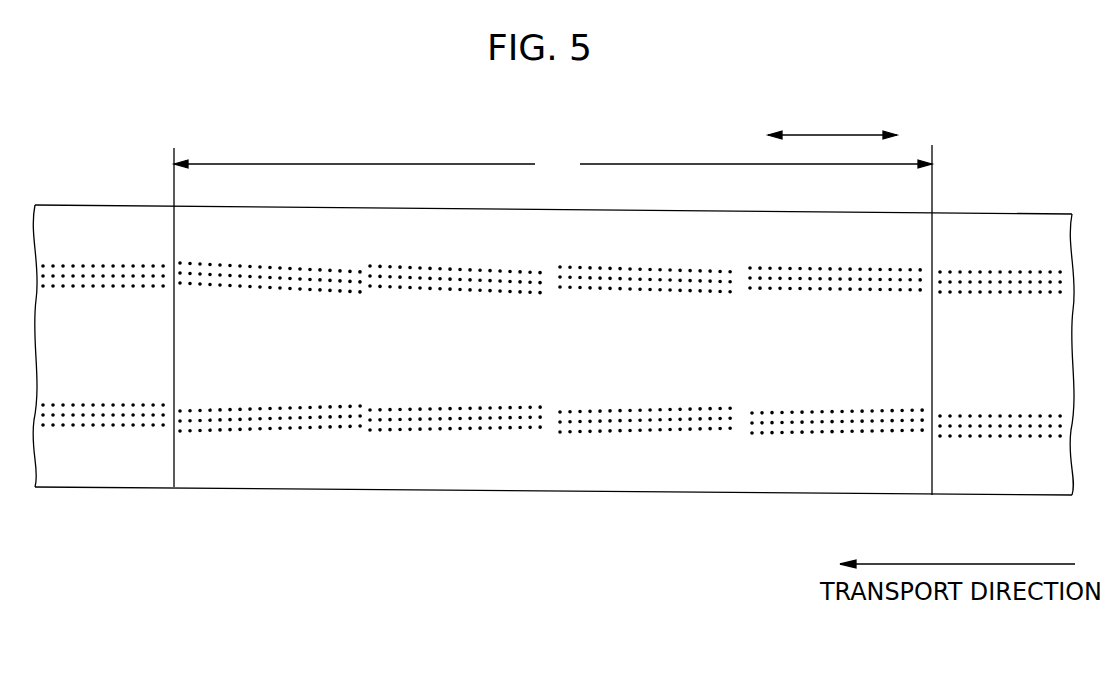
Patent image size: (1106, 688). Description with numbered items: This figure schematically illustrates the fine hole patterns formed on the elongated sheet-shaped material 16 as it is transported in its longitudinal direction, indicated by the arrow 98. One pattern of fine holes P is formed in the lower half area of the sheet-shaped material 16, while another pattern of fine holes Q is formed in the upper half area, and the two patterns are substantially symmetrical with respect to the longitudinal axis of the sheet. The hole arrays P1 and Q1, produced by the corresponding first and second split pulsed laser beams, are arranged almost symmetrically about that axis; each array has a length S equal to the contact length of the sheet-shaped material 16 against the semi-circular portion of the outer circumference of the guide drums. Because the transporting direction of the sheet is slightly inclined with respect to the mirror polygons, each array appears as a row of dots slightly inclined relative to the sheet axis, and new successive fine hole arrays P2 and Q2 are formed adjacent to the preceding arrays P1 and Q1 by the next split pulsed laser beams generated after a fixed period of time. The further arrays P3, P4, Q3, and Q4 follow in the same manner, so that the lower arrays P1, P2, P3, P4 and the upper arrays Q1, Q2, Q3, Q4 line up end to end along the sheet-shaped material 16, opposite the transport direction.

The sheet-shaped material 16 is at (868, 497).
The arrow indicating longitudinal direction 98 is at (838, 135).
The length of the hole arrays S is at (553, 165).
The hole array Q1 is at (175, 263).
The hole array Q2 is at (368, 265).
The third upper dot row segment start position Q3 is at (553, 265).
The fourth upper dot row segment start position Q4 is at (742, 268).
The hole array P1 is at (174, 435).
The hole array P2 is at (366, 434).
The third lower dot row segment start position P3 is at (553, 434).
The fourth lower dot row segment start position P4 is at (743, 437).